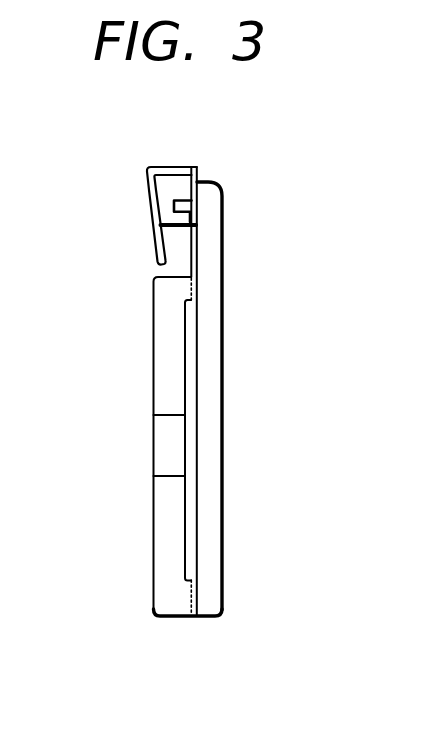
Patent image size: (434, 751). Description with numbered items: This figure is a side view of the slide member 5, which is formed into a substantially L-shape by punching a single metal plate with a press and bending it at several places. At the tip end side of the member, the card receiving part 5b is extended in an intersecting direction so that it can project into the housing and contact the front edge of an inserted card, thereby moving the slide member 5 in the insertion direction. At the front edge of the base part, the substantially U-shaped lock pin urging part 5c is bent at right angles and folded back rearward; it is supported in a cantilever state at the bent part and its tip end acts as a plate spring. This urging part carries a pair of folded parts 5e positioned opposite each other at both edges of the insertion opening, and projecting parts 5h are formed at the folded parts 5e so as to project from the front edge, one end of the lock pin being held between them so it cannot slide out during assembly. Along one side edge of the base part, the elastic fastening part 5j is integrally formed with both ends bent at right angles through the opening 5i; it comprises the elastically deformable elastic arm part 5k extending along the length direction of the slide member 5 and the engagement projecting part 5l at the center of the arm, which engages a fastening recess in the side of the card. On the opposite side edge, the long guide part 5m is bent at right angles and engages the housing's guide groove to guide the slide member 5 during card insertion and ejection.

The slide member 5 is at (154, 617).
The folded parts 5e is at (175, 168).
The projecting parts 5h is at (198, 173).
The lock pin urging part 5c is at (147, 208).
The card receiving part 5b is at (174, 221).
The opening 5i is at (193, 357).
The elastic fastening part 5j is at (60, 535).
The elastic arm part 5k is at (160, 360).
The engagement projecting part 5l is at (163, 443).
The guide part 5m is at (210, 493).